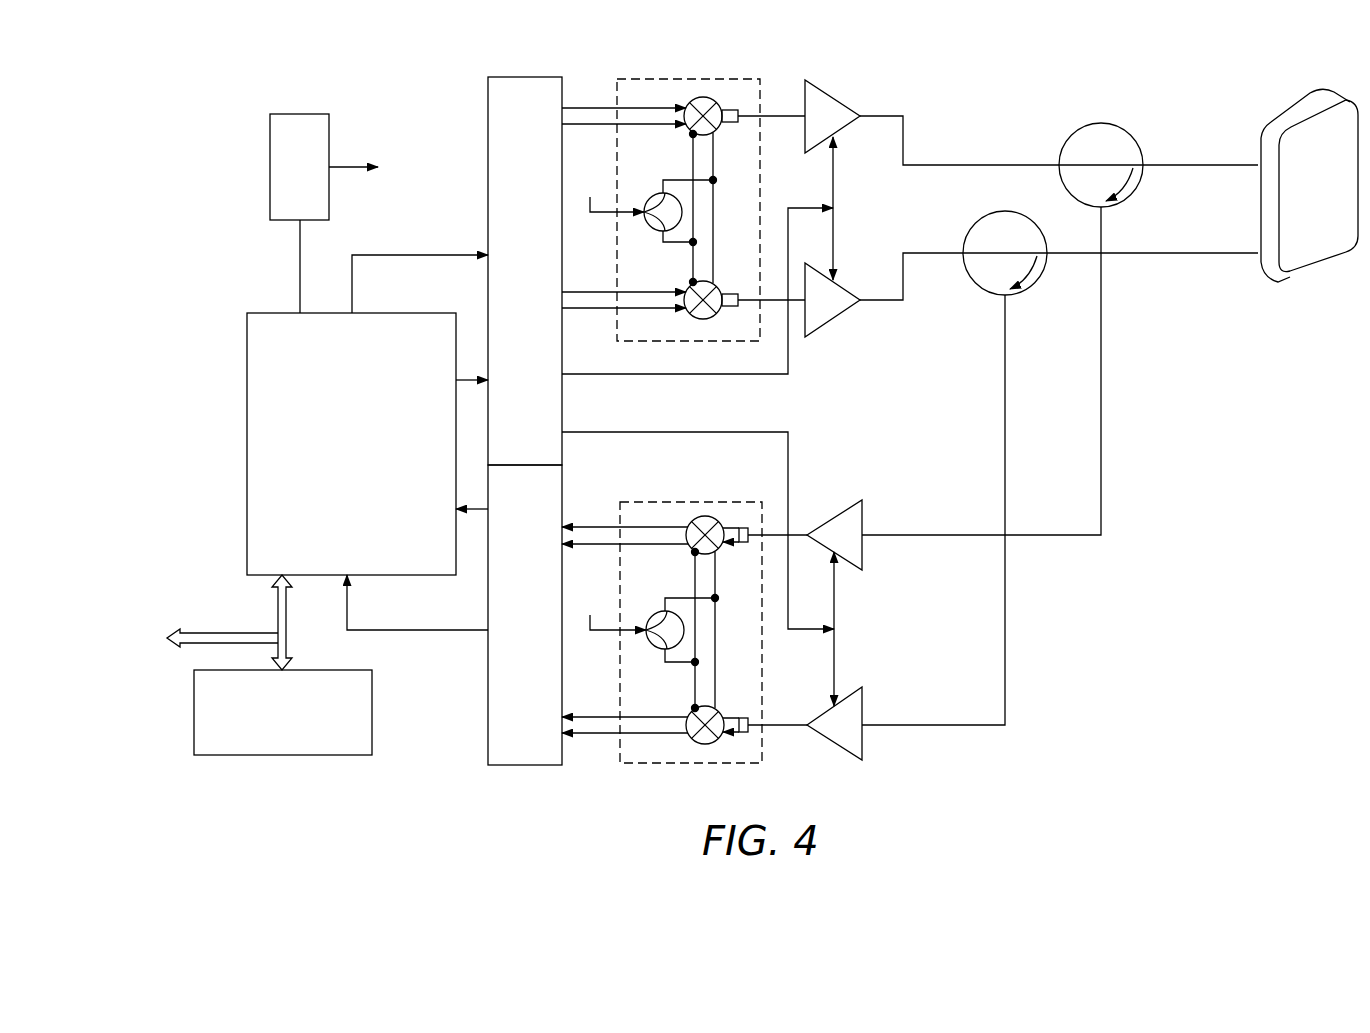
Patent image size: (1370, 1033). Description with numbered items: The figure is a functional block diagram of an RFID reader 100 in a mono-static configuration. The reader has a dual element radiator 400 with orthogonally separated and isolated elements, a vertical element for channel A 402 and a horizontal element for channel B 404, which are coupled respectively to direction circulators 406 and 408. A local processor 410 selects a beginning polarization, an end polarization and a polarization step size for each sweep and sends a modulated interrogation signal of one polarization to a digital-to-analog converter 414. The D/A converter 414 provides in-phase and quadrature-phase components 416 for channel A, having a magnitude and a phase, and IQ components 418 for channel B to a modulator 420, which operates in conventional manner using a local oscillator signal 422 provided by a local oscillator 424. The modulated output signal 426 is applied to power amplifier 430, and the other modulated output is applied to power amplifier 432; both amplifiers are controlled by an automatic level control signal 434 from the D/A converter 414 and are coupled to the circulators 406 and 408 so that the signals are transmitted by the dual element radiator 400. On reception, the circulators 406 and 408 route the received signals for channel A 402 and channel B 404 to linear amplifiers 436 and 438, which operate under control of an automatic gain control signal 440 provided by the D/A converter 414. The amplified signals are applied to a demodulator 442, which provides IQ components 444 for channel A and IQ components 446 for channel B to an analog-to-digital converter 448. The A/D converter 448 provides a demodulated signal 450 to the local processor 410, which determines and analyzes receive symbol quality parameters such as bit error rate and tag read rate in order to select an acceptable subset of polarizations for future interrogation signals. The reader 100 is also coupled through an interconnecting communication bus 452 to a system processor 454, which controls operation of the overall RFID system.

The RFID reader 100 is at (993, 92).
The dual element radiator 400 is at (1293, 107).
The channel A 402 is at (1188, 135).
The channel B 404 is at (1190, 284).
The direction circulator 406 is at (1073, 132).
The direction circulator 408 is at (1033, 283).
The local processor 410 is at (258, 313).
The digital-to-analog (D/A) converter 414 is at (525, 77).
The in-phase and quadrature-phase components for channel A 416 is at (597, 78).
The IQ components for channel B 418 is at (598, 352).
The modulator 420 is at (710, 79).
The local oscillator (LO) signal 422 is at (357, 164).
The local oscillator (LO) 424 is at (312, 114).
The modulated output signal 426 is at (782, 114).
The power amplifier 430 is at (844, 104).
The power amplifier 432 is at (848, 292).
The automatic level control (ALC) signal 434 is at (770, 376).
The linear amplifier 436 is at (862, 512).
The linear amplifier 438 is at (862, 750).
The automatic gain control (AGC) signal 440 is at (790, 462).
The demodulator 442 is at (710, 502).
The IQ components for channel A 444 is at (597, 495).
The IQ components for channel B 446 is at (571, 761).
The analog-to-digital (A/D) converter 448 is at (525, 767).
The demodulated signal 450 is at (448, 633).
The interconnecting communication bus 452 is at (217, 620).
The system processor 454 is at (355, 670).